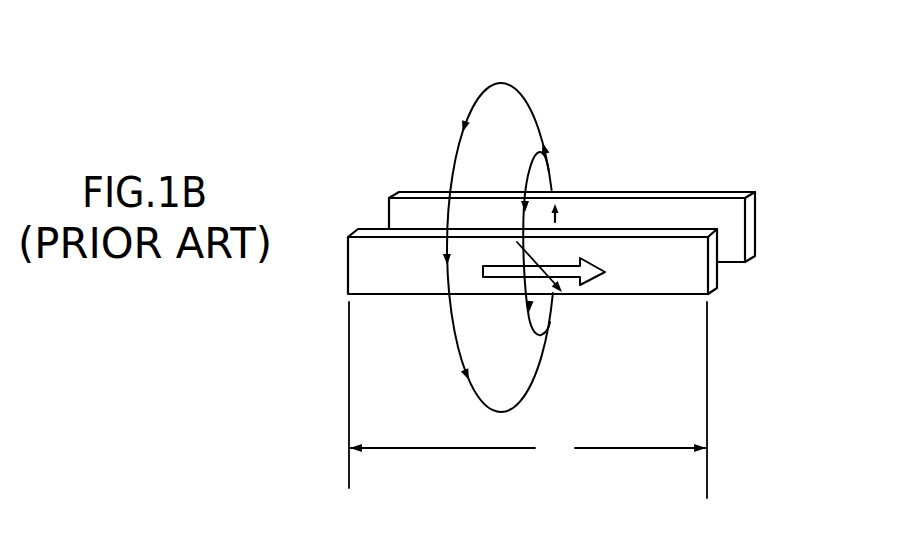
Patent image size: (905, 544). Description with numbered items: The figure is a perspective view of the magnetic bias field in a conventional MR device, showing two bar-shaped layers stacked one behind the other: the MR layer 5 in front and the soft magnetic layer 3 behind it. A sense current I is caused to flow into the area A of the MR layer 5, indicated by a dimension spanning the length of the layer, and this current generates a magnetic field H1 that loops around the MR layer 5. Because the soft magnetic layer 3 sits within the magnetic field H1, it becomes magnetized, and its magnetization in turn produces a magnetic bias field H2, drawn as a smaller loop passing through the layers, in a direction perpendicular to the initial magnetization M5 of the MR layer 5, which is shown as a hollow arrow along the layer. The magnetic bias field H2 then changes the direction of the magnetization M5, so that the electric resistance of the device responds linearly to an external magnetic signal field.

The soft magnetic layer 3 is at (721, 211).
The MR layer 5 is at (666, 288).
The initial magnetization M5 is at (540, 266).
The sense current I is at (502, 272).
The magnetic field H1 is at (542, 123).
The magnetic bias field H2 is at (531, 176).
The area A is at (528, 400).